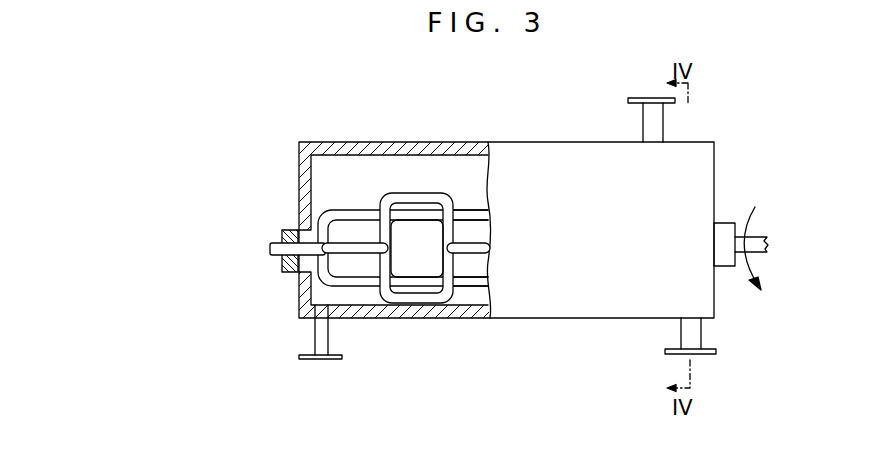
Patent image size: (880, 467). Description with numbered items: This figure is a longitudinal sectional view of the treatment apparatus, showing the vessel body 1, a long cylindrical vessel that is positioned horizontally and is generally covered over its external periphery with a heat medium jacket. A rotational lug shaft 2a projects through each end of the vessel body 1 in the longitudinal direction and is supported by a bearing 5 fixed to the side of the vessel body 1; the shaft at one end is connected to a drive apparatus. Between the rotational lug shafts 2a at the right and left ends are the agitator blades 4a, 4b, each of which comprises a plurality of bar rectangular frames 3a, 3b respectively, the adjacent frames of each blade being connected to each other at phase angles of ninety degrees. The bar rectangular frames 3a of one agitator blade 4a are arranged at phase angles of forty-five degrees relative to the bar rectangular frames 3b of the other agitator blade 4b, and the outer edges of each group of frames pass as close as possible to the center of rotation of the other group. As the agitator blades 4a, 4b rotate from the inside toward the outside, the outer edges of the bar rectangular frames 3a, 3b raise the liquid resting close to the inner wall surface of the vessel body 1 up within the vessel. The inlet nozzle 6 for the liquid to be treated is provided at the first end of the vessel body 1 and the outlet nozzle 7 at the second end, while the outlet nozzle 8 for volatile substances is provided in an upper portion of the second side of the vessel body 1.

The vessel body 1 is at (548, 141).
The rotational lug shaft 2a is at (272, 246).
The bar rectangular frame 3a is at (478, 242).
The bar rectangular frame 3b is at (470, 208).
The agitator blade 4a is at (379, 299).
The agitator blade 4b is at (357, 209).
The bearing 5 is at (287, 229).
The inlet nozzle 6 is at (321, 362).
The outlet nozzle 7 is at (702, 357).
The outlet nozzle for volatile substances 8 is at (636, 98).